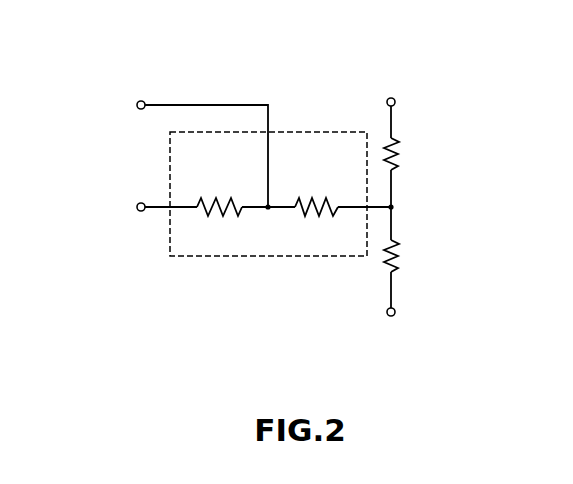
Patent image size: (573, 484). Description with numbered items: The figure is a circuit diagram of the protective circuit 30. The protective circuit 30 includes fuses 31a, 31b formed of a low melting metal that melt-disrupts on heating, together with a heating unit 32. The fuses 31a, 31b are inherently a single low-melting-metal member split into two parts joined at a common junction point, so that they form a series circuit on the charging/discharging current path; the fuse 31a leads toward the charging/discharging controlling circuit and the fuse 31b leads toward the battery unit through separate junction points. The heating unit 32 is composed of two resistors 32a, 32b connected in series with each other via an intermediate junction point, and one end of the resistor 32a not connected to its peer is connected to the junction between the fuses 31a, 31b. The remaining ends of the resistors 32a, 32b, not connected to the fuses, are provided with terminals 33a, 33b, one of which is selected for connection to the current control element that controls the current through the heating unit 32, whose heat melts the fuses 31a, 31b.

The protective circuit 30 is at (291, 29).
The fuse 31a is at (397, 253).
The fuse 31b is at (397, 152).
The heating unit 32 is at (288, 257).
The resistor 32a is at (307, 205).
The resistor 32b is at (211, 205).
The terminal 33a is at (137, 105).
The terminal 33b is at (137, 206).